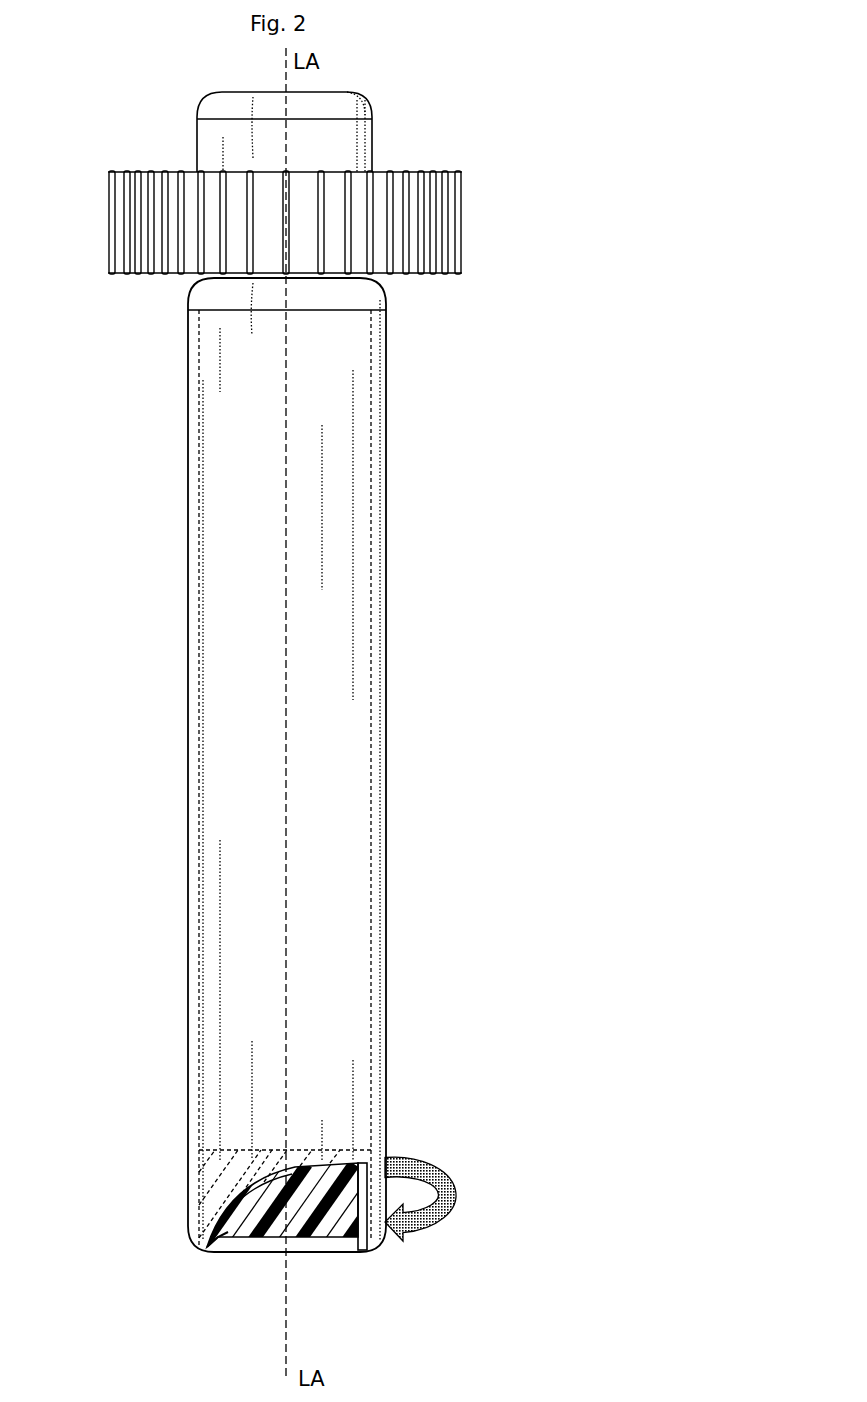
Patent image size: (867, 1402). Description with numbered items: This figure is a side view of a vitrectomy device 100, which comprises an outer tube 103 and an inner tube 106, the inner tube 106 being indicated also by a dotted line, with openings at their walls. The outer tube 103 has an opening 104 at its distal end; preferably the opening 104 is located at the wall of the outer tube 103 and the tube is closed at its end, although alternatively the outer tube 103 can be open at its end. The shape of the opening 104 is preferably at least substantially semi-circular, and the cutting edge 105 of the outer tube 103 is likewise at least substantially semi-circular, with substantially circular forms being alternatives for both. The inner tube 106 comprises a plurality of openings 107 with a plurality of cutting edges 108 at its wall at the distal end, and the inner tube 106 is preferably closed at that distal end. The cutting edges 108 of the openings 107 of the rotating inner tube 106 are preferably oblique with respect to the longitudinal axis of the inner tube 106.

The vitrectomy device 100 is at (150, 80).
The outer tube 103 is at (320, 433).
The opening 104 is at (302, 1170).
The cutting edge 105 is at (211, 1243).
The openings 107 is at (283, 1228).
The cutting edges 108 is at (342, 1222).
The inner tube 106 is at (320, 153).